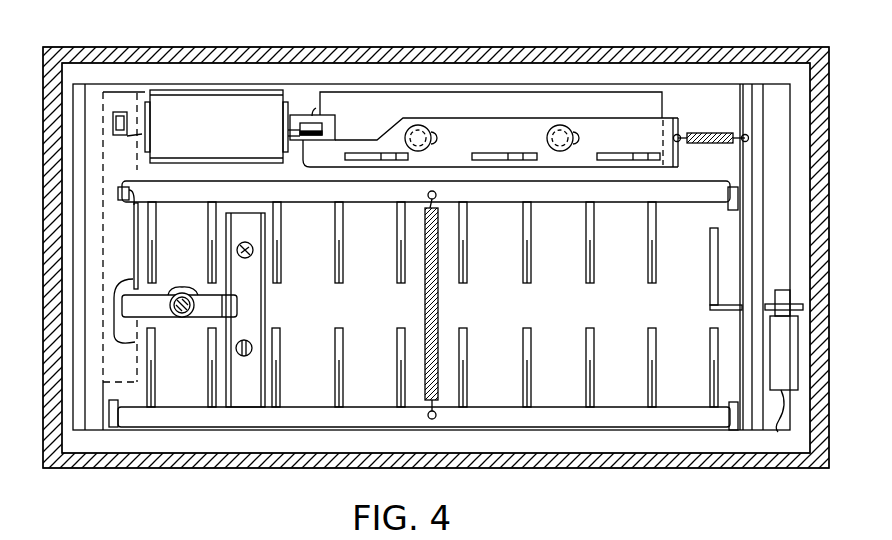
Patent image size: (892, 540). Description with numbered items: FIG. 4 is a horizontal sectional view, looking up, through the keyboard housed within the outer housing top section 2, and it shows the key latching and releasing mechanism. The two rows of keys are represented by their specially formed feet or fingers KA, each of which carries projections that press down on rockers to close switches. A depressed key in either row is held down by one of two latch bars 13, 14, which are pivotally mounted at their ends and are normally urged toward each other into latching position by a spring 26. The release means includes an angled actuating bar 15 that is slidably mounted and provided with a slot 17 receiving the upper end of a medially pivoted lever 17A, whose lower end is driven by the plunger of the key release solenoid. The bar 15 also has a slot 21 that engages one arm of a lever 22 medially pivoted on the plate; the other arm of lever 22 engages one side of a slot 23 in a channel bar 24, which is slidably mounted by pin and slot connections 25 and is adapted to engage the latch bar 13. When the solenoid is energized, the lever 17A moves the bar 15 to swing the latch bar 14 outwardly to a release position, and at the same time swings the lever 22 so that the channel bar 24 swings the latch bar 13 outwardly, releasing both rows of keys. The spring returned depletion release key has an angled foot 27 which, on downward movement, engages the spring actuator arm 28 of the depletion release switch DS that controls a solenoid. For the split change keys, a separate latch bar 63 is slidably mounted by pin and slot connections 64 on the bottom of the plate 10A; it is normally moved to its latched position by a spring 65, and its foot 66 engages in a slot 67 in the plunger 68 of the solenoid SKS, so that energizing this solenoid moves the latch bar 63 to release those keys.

The outer housing top section 2 is at (757, 50).
The plate 10A is at (526, 103).
The latch bar 13 is at (672, 418).
The latch bar 14 is at (706, 196).
The angled actuating bar 15 is at (131, 258).
The slot 17 is at (127, 136).
The lever 17A is at (120, 112).
The slot 21 is at (130, 340).
The lever 22 is at (182, 320).
The slot 23 is at (228, 322).
The channel bar 24 is at (256, 394).
The pin and slot connections 25 is at (245, 264).
The spring 26 is at (426, 310).
The angled foot 27 is at (712, 302).
The spring actuator arm 28 is at (786, 290).
The latch bar 63 is at (630, 130).
The pin and slot connections 64 is at (553, 138).
The spring 65 is at (712, 131).
The foot 66 is at (334, 118).
The slot 67 is at (316, 113).
The plunger 68 is at (336, 130).
The foot or finger KA is at (208, 258).
The depletion release switch DS is at (764, 270).
The solenoid SKS is at (216, 126).